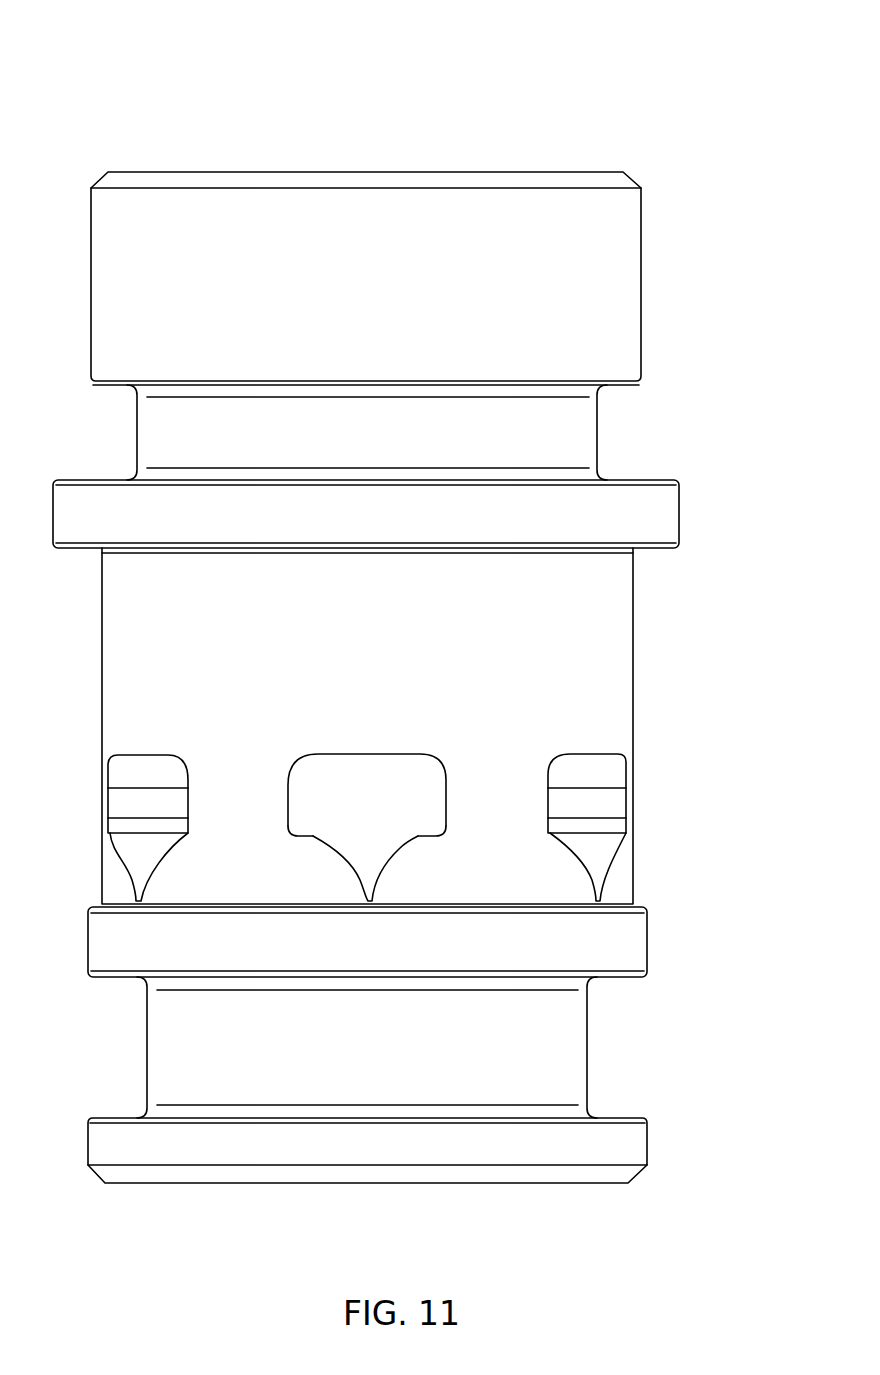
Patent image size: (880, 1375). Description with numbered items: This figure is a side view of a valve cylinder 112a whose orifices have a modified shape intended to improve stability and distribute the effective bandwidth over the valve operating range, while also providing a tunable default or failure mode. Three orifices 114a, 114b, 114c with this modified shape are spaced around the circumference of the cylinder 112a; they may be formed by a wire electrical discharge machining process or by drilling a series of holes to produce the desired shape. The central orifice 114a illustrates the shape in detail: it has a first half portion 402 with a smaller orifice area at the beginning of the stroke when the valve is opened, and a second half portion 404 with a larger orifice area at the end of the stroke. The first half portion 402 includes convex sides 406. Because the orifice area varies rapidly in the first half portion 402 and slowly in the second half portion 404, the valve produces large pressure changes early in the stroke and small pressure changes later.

The valve cylinder 112a is at (613, 68).
The orifice 114a is at (364, 786).
The orifice 114b is at (133, 754).
The orifice 114c is at (586, 754).
The first half portion 402 is at (458, 832).
The second half portion 404 is at (289, 755).
The convex sides 406 is at (315, 838).